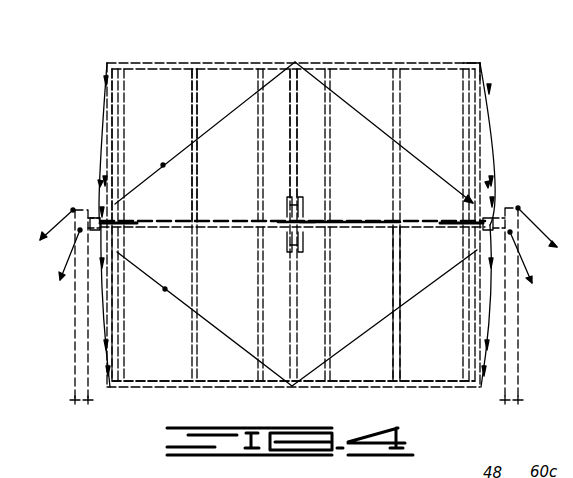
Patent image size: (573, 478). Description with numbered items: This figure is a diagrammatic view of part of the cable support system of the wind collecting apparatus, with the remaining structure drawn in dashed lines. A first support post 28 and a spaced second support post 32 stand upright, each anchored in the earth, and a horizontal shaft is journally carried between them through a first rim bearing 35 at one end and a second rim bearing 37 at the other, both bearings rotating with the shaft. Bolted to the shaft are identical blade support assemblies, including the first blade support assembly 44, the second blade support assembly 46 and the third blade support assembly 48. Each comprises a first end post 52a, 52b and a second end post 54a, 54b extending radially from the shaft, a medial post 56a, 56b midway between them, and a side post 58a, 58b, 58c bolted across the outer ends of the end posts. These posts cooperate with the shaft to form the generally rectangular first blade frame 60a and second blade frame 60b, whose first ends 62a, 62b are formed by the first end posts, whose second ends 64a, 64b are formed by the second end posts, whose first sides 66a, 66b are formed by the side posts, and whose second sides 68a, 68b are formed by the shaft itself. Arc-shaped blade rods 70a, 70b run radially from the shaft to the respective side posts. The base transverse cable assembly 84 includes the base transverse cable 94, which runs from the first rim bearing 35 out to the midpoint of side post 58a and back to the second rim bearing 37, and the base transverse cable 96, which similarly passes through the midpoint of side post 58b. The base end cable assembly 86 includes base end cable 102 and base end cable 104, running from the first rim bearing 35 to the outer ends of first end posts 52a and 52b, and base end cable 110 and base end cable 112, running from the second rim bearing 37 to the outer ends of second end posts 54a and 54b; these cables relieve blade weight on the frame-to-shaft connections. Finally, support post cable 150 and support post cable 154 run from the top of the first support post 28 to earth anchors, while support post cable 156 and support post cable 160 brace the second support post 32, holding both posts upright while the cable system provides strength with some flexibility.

The first support post 28 is at (78, 371).
The second support post 32 is at (515, 380).
The first rim bearing 35 is at (97, 181).
The second rim bearing 37 is at (491, 181).
The first blade support assembly 44 is at (222, 63).
The second blade support assembly 46 is at (168, 387).
The third blade support assembly 48 is at (235, 230).
The first end post 52a is at (108, 125).
The first end post 52b is at (108, 318).
The second end post 54a is at (480, 108).
The second end post 54b is at (480, 313).
The medial post 56a is at (303, 95).
The medial post 56b is at (292, 289).
The side post 58a is at (413, 62).
The side post 58b is at (345, 388).
The side post 58c is at (342, 222).
The first blade frame 60a is at (143, 63).
The second blade frame 60b is at (428, 389).
The first end of first blade frame 62a is at (112, 147).
The first end of second blade frame 62b is at (108, 295).
The second end of first blade frame 64a is at (479, 121).
The second end of second blade frame 64b is at (480, 293).
The first side of first blade frame 66a is at (246, 65).
The first side of second blade frame 66b is at (390, 387).
The second side of first blade frame 68a is at (173, 222).
The second side of second blade frame 68b is at (428, 222).
The blade rods 70a is at (257, 192).
The blade rods 70b is at (392, 322).
The base transverse cable assembly 84 is at (379, 117).
The base end cable assembly 86 is at (486, 90).
The base transverse cable 94 is at (163, 163).
The base transverse cable 96 is at (165, 291).
The base end cable 102 is at (103, 108).
The base end cable 104 is at (106, 333).
The base end cable 110 is at (488, 132).
The base end cable 112 is at (485, 330).
The support post cable 150 is at (56, 222).
The support post cable 154 is at (67, 261).
The support post cable 156 is at (525, 216).
The support post cable 160 is at (527, 262).